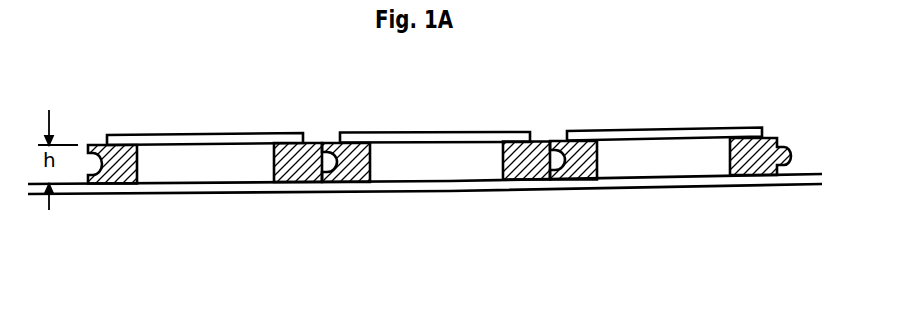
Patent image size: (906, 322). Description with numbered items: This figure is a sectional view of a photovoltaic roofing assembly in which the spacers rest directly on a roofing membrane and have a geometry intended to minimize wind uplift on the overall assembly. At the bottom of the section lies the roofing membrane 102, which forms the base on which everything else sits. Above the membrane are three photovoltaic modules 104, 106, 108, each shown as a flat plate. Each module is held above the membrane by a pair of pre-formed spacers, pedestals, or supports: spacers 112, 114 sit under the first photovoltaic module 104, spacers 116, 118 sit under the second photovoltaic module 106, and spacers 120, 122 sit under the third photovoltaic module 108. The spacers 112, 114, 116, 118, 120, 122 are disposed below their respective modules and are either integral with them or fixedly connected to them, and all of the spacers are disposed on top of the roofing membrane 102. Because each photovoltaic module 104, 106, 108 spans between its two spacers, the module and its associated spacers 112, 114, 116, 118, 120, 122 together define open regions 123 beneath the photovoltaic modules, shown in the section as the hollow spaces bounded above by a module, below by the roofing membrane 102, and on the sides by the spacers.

The roofing membrane 102 is at (434, 189).
The photovoltaic module 104 is at (222, 134).
The photovoltaic module 106 is at (427, 132).
The photovoltaic module 108 is at (672, 129).
The spacer 112 is at (132, 184).
The spacer 114 is at (288, 172).
The spacer 116 is at (363, 172).
The spacer 118 is at (513, 170).
The spacer 120 is at (586, 170).
The spacer 122 is at (769, 164).
The open region 123 is at (200, 165).